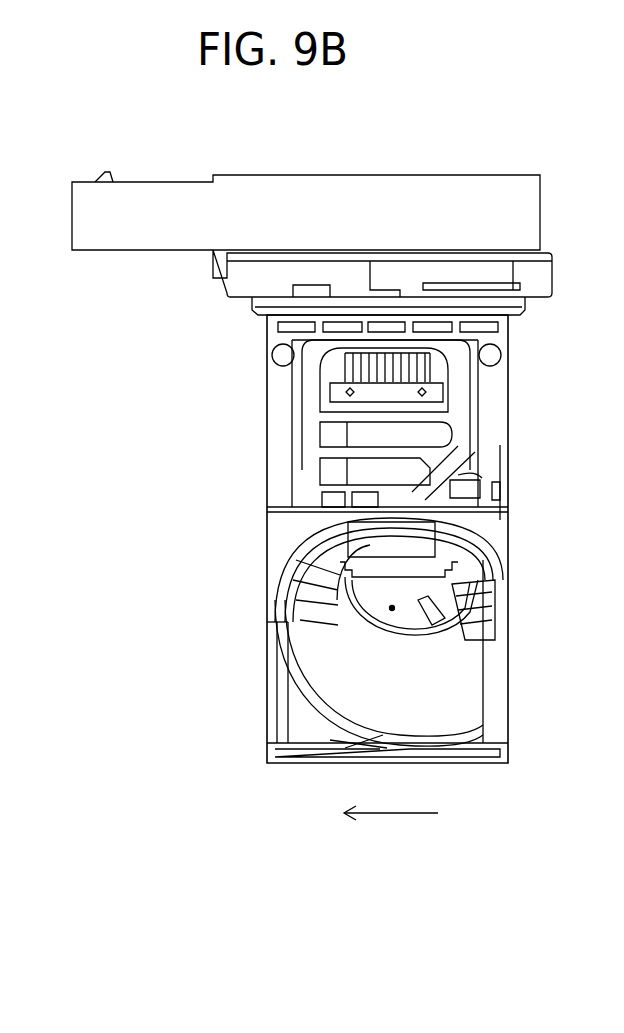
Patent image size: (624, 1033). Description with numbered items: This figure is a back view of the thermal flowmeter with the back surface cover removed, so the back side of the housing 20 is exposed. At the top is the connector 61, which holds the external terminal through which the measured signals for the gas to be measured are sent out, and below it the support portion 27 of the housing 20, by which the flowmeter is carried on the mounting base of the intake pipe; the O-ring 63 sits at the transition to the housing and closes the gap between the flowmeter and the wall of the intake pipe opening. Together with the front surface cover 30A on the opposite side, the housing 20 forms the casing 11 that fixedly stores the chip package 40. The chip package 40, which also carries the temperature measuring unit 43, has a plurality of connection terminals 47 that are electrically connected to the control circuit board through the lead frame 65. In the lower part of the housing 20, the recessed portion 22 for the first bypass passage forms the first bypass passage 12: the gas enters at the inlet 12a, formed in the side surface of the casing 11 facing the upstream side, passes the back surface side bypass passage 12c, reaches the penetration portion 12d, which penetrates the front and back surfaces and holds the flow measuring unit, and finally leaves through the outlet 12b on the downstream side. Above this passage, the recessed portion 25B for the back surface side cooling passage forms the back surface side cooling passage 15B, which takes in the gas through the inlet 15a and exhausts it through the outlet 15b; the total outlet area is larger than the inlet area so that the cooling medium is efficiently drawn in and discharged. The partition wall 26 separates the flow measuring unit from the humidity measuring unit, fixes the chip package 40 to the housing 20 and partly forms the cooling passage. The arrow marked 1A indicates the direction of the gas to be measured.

The casing 11 is at (120, 368).
The first bypass passage 12 is at (325, 539).
The recessed portion for the first bypass passage 22 is at (352, 666).
The inlet 12a is at (483, 673).
The outlet 12b is at (310, 722).
The back surface side bypass passage 12c is at (335, 633).
The penetration portion 12d is at (330, 537).
The inlet of the cooling passage 15a is at (470, 508).
The outlet of the cooling passage 15b is at (322, 497).
The back surface side cooling passage 15B is at (255, 509).
The recessed portion for the back surface side cooling passage 25B is at (300, 509).
The housing 20 is at (292, 470).
The partition wall 26 is at (455, 560).
The support portion 27 is at (313, 280).
The front surface cover 30A is at (465, 472).
The chip package 40 is at (415, 445).
The temperature measuring unit 43 is at (505, 492).
The connection terminals 47 is at (302, 392).
The connector 61 is at (232, 218).
The O-ring 63 is at (262, 316).
The lead frame 65 is at (505, 365).
The section line 1A is at (391, 801).